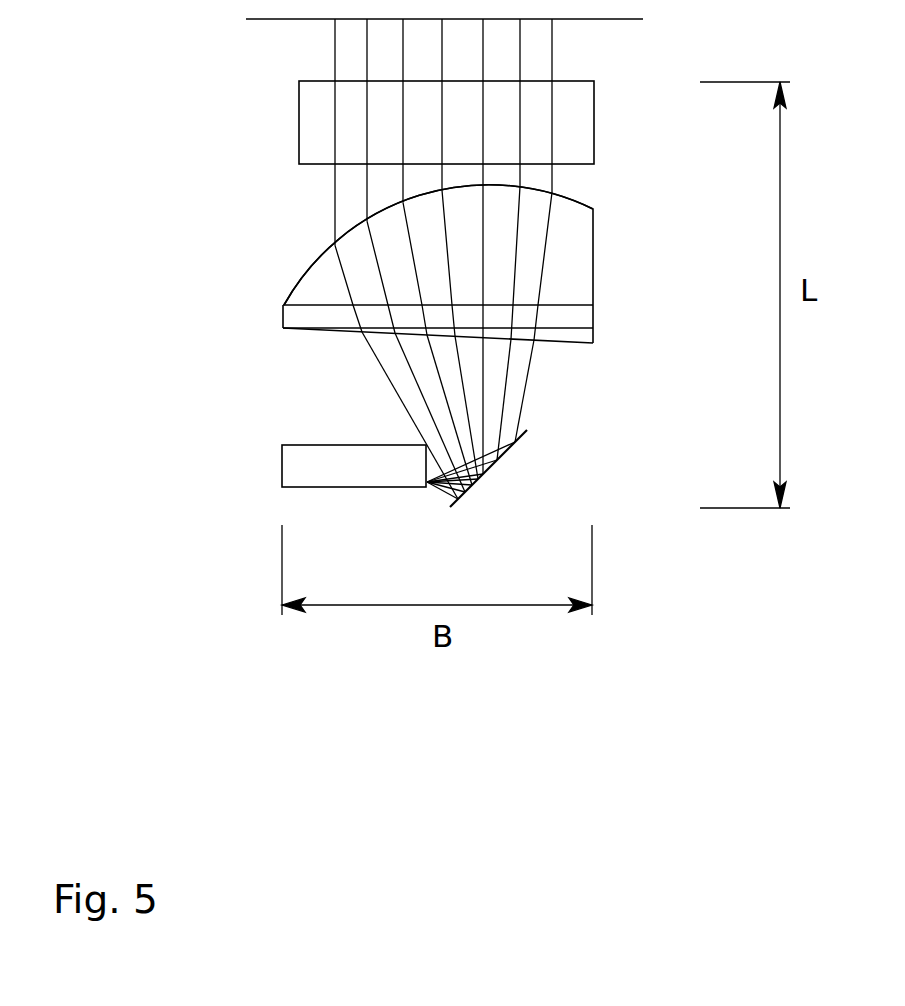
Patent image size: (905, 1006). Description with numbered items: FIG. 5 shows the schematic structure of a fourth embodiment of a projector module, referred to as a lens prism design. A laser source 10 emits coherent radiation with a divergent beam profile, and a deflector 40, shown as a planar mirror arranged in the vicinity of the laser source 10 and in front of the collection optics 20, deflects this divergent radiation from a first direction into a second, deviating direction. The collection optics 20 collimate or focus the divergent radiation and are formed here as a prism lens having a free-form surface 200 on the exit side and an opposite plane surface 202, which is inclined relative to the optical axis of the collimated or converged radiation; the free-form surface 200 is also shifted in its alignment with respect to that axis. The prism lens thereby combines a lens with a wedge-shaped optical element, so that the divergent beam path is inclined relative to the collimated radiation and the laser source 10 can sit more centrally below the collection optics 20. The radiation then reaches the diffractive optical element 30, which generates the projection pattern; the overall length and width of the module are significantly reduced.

The laser source 10 is at (337, 457).
The collection optics 20 is at (572, 268).
The free-form surface 200 is at (313, 265).
The plane surface 202 is at (568, 343).
The diffractive optical element 30 is at (572, 128).
The deflector 40 is at (527, 430).